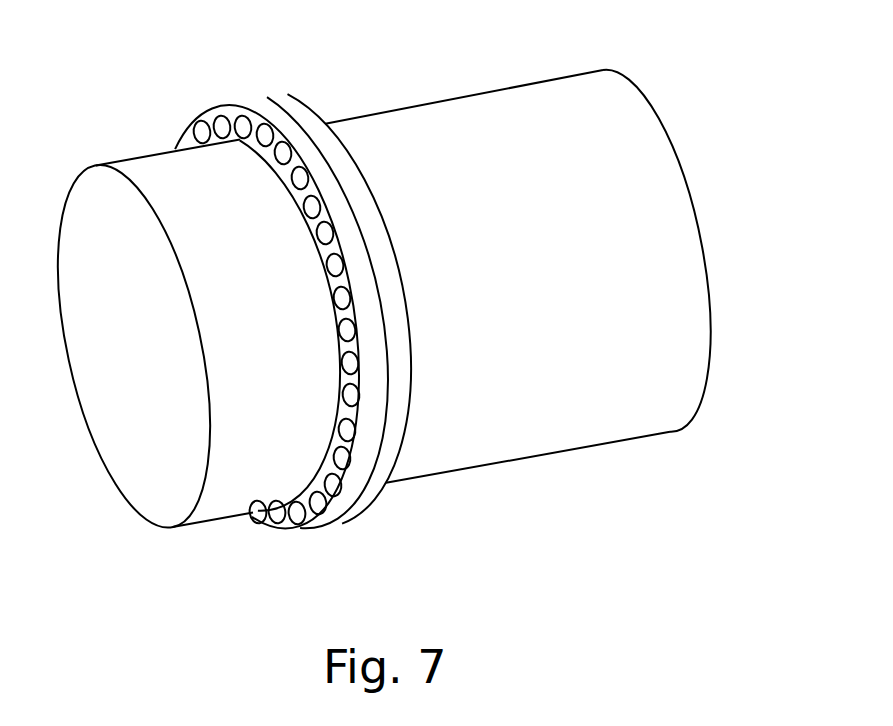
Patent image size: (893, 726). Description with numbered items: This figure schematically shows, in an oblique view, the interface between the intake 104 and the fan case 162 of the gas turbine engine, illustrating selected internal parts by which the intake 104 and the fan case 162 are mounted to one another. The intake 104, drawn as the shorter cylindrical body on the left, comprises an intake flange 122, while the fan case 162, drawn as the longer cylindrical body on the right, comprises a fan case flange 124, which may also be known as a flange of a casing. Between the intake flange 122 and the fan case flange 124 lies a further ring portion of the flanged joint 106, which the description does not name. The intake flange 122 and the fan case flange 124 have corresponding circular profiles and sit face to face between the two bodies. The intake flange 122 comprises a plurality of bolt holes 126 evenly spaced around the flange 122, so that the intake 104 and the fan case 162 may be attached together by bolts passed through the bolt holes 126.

The intake 104 is at (108, 164).
The intake flange 122 is at (245, 100).
The bearing body 106 is at (273, 100).
The fan case flange 124 is at (300, 100).
The bolt holes 126 is at (352, 460).
The fan case 162 is at (656, 112).